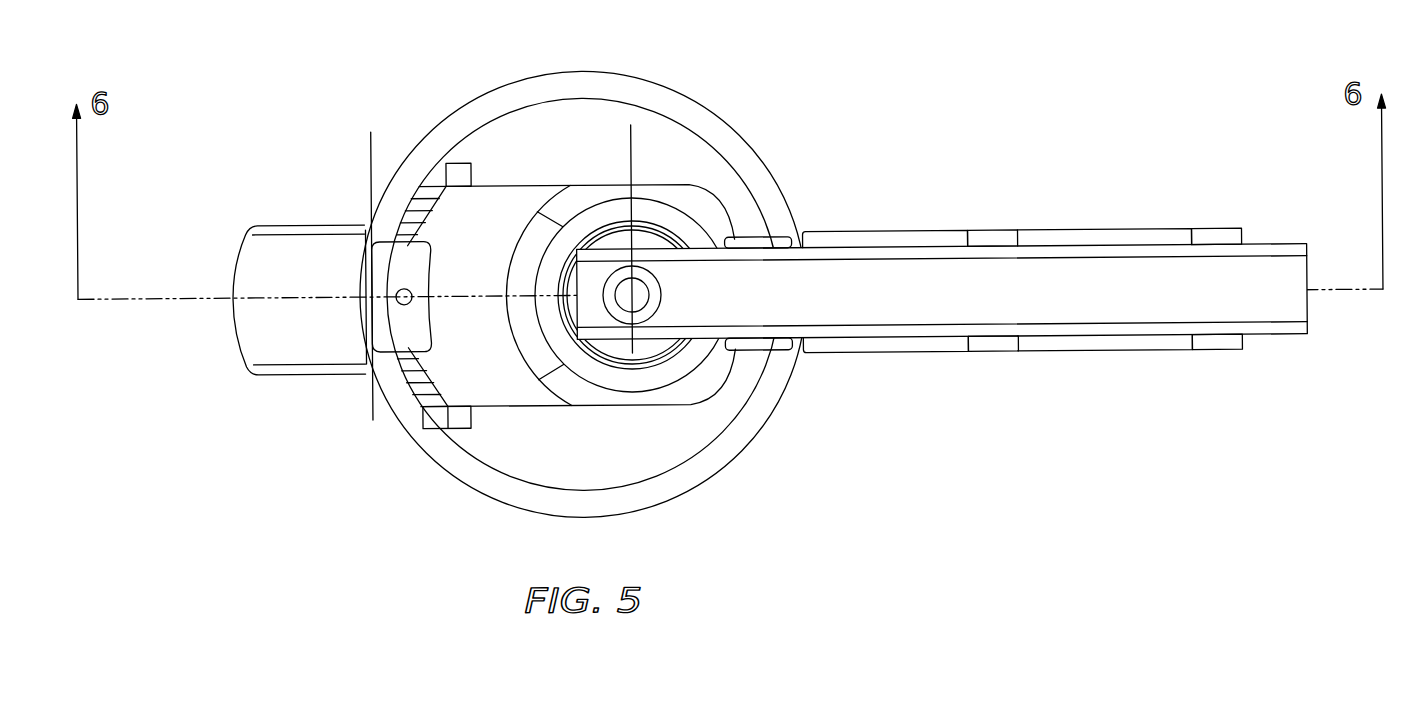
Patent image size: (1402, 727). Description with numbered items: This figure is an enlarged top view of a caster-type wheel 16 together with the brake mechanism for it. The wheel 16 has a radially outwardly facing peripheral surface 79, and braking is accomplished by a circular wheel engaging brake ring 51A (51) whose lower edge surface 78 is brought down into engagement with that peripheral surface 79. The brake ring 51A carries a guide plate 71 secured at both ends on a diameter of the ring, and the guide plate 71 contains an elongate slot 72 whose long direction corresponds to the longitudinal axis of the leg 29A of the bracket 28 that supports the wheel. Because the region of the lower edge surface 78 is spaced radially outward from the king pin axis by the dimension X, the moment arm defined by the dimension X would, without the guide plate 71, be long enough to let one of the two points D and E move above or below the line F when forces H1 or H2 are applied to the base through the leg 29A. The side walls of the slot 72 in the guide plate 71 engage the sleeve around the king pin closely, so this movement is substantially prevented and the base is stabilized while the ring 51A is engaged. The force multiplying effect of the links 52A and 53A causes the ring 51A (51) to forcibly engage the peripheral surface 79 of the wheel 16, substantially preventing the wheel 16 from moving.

The caster-type wheel 16 is at (311, 373).
The peripheral surface 79 is at (270, 248).
The lower edge surface 78 is at (371, 294).
The guide plate 71 is at (533, 392).
The elongate slot 72 is at (530, 336).
The brake ring 51A is at (583, 285).
The wheel engaging brake ring 51 is at (657, 100).
The bracket 28 is at (942, 252).
The leg 29A is at (1005, 273).
The link 52A is at (880, 232).
The link 53A is at (1140, 236).
The point D is at (372, 295).
The point E is at (633, 294).
The line F is at (780, 296).
The dimension X is at (372, 153).
The force H1 is at (935, 354).
The force H2 is at (935, 234).